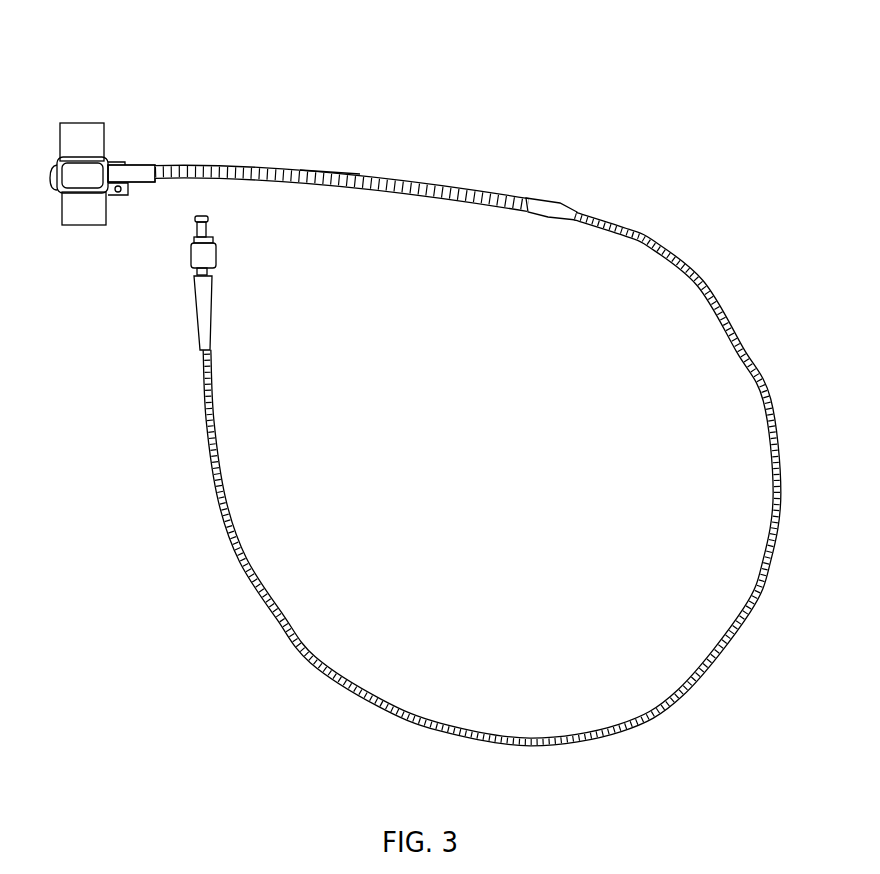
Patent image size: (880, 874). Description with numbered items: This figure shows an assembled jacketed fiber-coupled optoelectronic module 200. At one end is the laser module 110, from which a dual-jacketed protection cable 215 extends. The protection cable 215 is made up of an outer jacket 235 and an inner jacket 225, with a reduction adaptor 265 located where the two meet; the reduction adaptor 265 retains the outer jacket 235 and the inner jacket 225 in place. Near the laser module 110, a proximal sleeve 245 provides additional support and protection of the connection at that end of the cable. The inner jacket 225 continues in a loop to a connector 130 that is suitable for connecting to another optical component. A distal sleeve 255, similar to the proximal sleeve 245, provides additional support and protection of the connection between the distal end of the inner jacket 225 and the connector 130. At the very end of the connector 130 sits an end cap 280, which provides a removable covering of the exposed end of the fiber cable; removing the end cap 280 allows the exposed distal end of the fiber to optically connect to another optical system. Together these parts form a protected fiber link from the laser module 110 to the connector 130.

The jacketed fiber-coupled optoelectronic module 200 is at (688, 72).
The laser module 110 is at (82, 210).
The proximal sleeve 245 is at (140, 165).
The outer jacket 235 is at (410, 180).
The dual-jacketed protection cable 215 is at (342, 176).
The reduction adaptor 265 is at (558, 205).
The inner jacket 225 is at (627, 236).
The end cap 280 is at (209, 222).
The connector 130 is at (216, 256).
The distal sleeve 255 is at (213, 306).